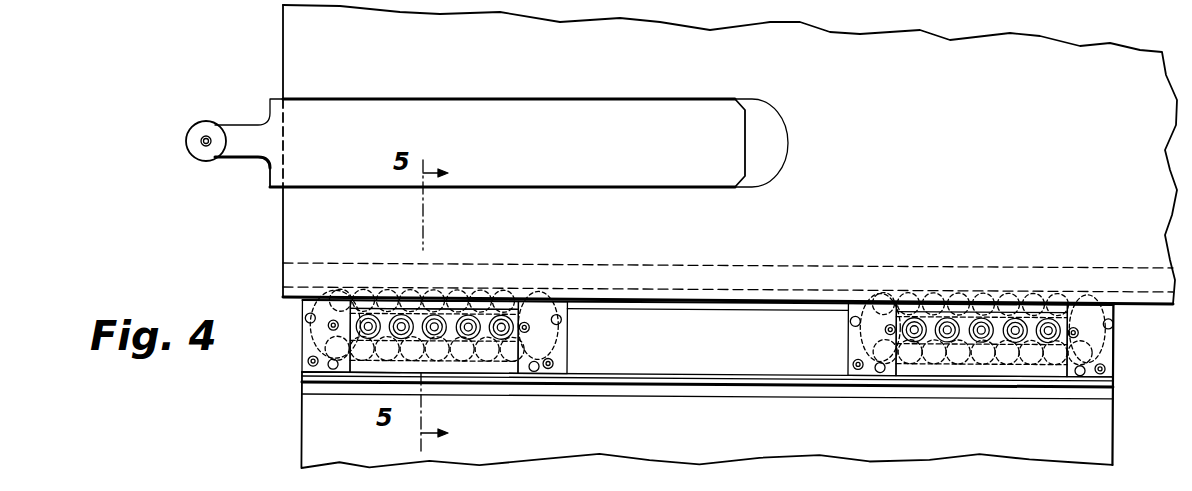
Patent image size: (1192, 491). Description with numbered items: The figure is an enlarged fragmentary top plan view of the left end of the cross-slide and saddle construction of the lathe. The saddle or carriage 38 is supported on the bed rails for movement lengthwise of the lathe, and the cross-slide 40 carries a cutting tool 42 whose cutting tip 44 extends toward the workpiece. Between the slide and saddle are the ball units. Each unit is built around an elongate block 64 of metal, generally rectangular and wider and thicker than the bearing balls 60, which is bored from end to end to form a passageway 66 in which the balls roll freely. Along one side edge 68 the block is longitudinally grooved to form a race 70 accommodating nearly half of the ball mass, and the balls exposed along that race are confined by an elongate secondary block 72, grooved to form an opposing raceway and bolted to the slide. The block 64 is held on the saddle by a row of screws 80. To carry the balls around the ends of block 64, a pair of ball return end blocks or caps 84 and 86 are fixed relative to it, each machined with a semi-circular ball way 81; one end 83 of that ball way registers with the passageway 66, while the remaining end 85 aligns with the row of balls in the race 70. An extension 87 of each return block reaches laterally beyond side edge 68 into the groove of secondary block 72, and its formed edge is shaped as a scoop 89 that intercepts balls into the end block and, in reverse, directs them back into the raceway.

The saddle or carriage 38 is at (308, 438).
The cross-slide 40 is at (1143, 299).
The cutting tool 42 is at (305, 178).
The cutting tip 44 is at (212, 152).
The bearing ball 60 is at (458, 305).
The elongate block 64 is at (490, 372).
The passageway 66 is at (447, 368).
The side edge 68 is at (438, 307).
The race 70 is at (512, 290).
The secondary block 72 is at (372, 294).
The screws 80 is at (507, 338).
The semi-circular ball way 81 is at (307, 338).
The end of ball way 83 is at (357, 372).
The ball return end block or cap 84 is at (307, 353).
The remaining end of ball way 85 is at (352, 295).
The ball return end block or cap 86 is at (568, 349).
The extension 87 is at (319, 288).
The scoop 89 is at (342, 288).